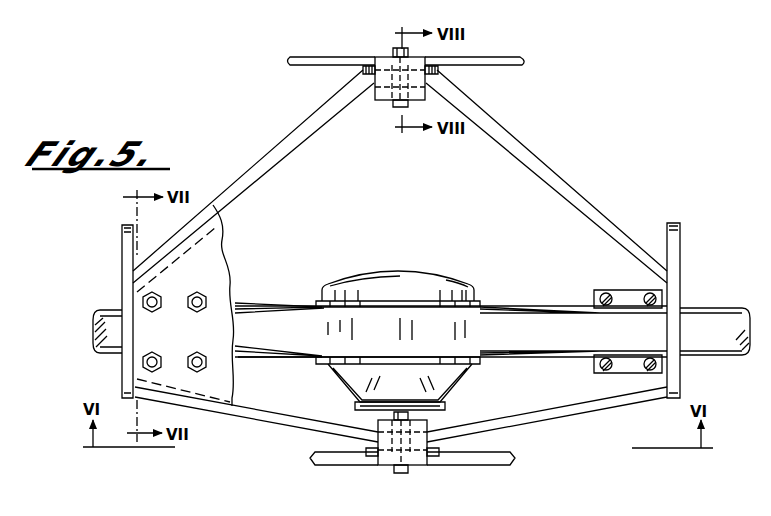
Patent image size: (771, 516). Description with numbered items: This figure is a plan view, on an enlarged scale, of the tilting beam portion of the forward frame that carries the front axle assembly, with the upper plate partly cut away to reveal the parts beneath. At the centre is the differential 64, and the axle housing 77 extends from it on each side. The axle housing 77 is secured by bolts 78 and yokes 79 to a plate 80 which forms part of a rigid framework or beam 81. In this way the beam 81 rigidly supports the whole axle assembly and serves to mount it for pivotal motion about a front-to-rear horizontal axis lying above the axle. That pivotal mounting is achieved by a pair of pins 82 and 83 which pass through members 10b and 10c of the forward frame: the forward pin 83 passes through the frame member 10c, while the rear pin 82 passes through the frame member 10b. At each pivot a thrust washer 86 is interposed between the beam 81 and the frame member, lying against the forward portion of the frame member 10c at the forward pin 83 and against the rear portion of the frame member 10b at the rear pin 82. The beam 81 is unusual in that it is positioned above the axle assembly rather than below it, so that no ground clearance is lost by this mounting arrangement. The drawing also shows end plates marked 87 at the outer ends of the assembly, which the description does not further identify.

The frame member 10b is at (420, 425).
The frame member 10c is at (418, 60).
The differential 64 is at (445, 274).
The axle housing 77 is at (109, 312).
The bolts 78 is at (150, 363).
The yokes 79 is at (627, 368).
The plate 80 is at (208, 252).
The beam 81 is at (284, 152).
The rear pin 82 is at (400, 474).
The forward pin 83 is at (392, 52).
The thrust washer 86 is at (440, 70).
The end plate 87 is at (127, 248).